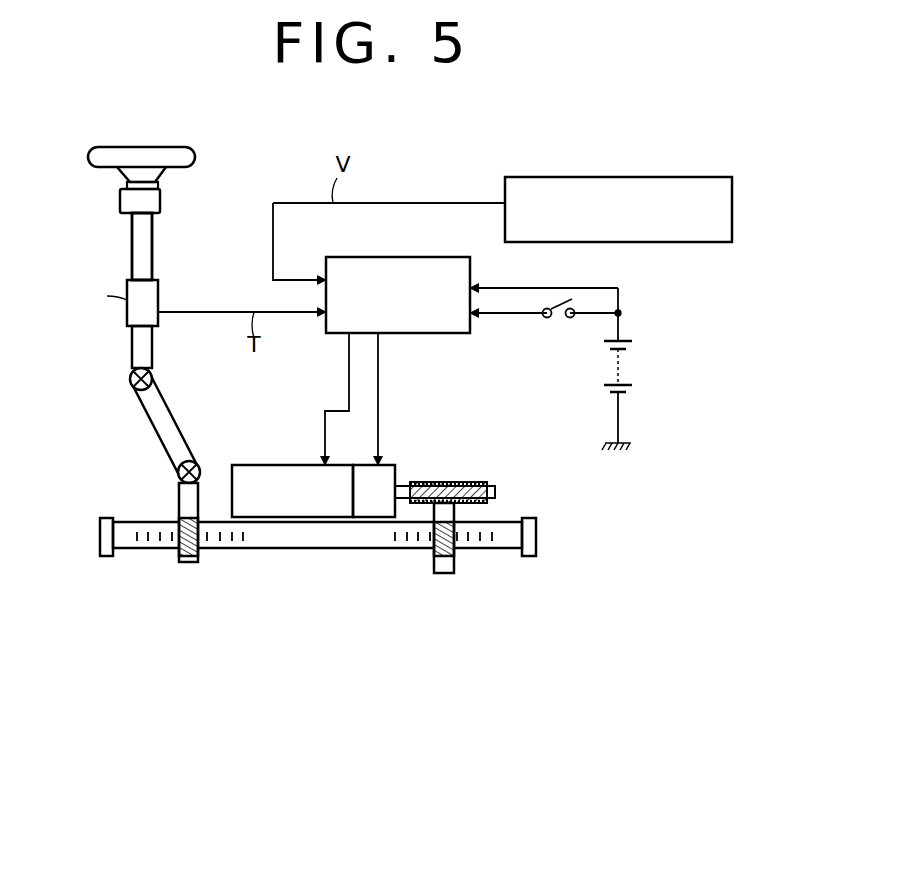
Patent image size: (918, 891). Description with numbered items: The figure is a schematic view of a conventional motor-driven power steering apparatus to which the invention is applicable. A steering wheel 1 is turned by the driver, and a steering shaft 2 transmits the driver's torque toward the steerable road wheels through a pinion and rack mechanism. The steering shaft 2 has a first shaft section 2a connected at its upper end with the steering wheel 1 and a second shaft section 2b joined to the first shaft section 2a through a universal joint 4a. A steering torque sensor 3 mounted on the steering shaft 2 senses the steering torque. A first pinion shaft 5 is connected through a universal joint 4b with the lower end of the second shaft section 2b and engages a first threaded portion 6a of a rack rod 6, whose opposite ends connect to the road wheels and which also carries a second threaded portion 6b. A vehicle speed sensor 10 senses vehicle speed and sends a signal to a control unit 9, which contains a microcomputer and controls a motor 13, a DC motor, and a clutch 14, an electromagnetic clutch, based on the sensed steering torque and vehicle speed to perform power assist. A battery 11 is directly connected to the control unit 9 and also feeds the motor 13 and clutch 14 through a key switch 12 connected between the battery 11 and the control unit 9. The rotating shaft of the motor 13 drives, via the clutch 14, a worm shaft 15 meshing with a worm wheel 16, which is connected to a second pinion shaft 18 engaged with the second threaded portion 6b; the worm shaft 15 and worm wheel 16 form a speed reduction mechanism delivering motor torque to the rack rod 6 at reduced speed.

The steering wheel 1 is at (196, 152).
The steering shaft 2 is at (127, 250).
The first shaft section 2a is at (152, 243).
The second shaft section 2b is at (178, 418).
The steering torque sensor 3 is at (158, 286).
The universal joint 4a is at (130, 380).
The universal joint 4b is at (178, 472).
The first pinion shaft 5 is at (189, 562).
The rack rod 6 is at (293, 549).
The first threaded portion 6a is at (240, 548).
The second threaded portion 6b is at (478, 548).
The control unit 9 is at (437, 257).
The vehicle speed sensor 10 is at (573, 177).
The battery 11 is at (622, 362).
The key switch 12 is at (560, 318).
The motor 13 is at (276, 465).
The clutch 14 is at (396, 468).
The worm shaft 15 is at (496, 494).
The worm wheel 16 is at (492, 483).
The second pinion shaft 18 is at (443, 573).